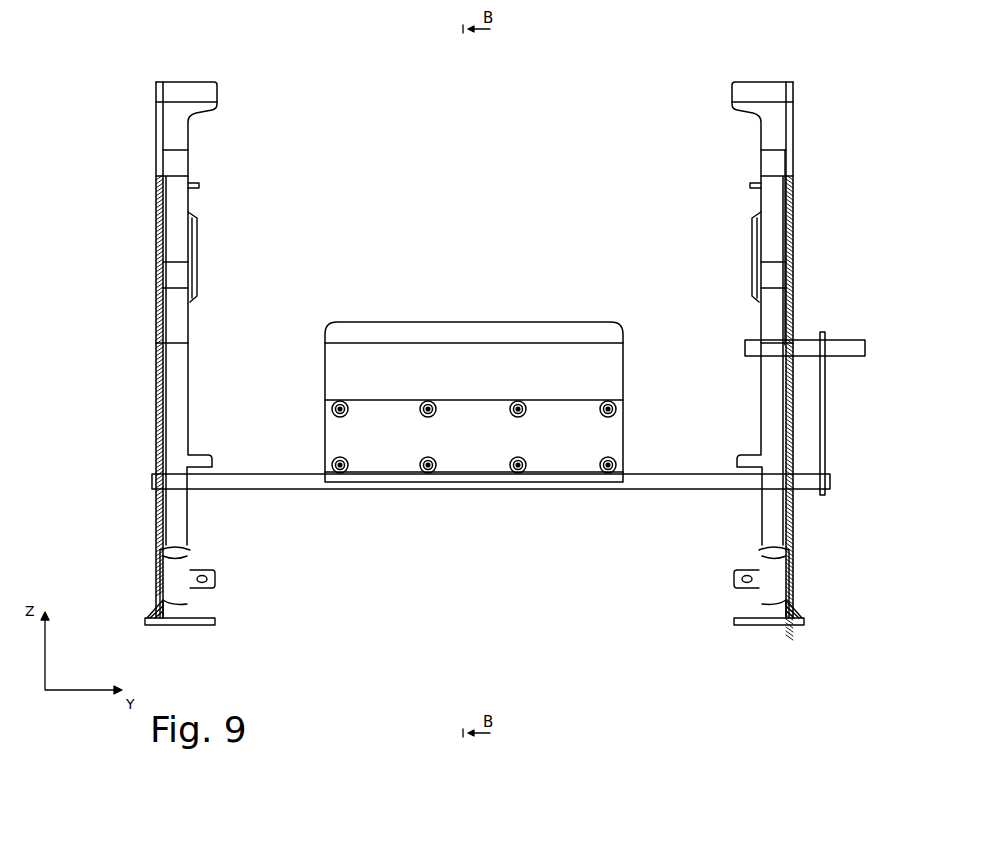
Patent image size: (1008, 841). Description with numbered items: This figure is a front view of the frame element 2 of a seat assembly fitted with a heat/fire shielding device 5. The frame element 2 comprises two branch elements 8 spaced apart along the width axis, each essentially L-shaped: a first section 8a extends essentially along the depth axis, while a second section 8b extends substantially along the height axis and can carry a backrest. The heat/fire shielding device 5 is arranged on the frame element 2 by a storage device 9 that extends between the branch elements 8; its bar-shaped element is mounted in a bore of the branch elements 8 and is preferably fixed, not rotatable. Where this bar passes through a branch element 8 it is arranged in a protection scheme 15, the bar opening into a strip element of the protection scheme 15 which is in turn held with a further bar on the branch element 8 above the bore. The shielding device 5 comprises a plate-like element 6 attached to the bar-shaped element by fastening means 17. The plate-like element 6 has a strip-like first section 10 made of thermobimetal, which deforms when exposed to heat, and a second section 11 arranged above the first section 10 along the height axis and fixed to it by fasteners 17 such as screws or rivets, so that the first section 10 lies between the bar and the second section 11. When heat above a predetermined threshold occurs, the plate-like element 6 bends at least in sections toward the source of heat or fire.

The frame element 2 is at (786, 160).
The heat/fire shielding device 5 is at (474, 384).
The plate-like element 6 is at (541, 331).
The branch elements 8 is at (156, 122).
The first section 8a is at (185, 625).
The second section 8b is at (192, 178).
The storage device 9 is at (262, 491).
The first section 10 is at (555, 462).
The second section 11 is at (597, 331).
The protection scheme 15 is at (826, 415).
The fastening means 17 is at (518, 404).